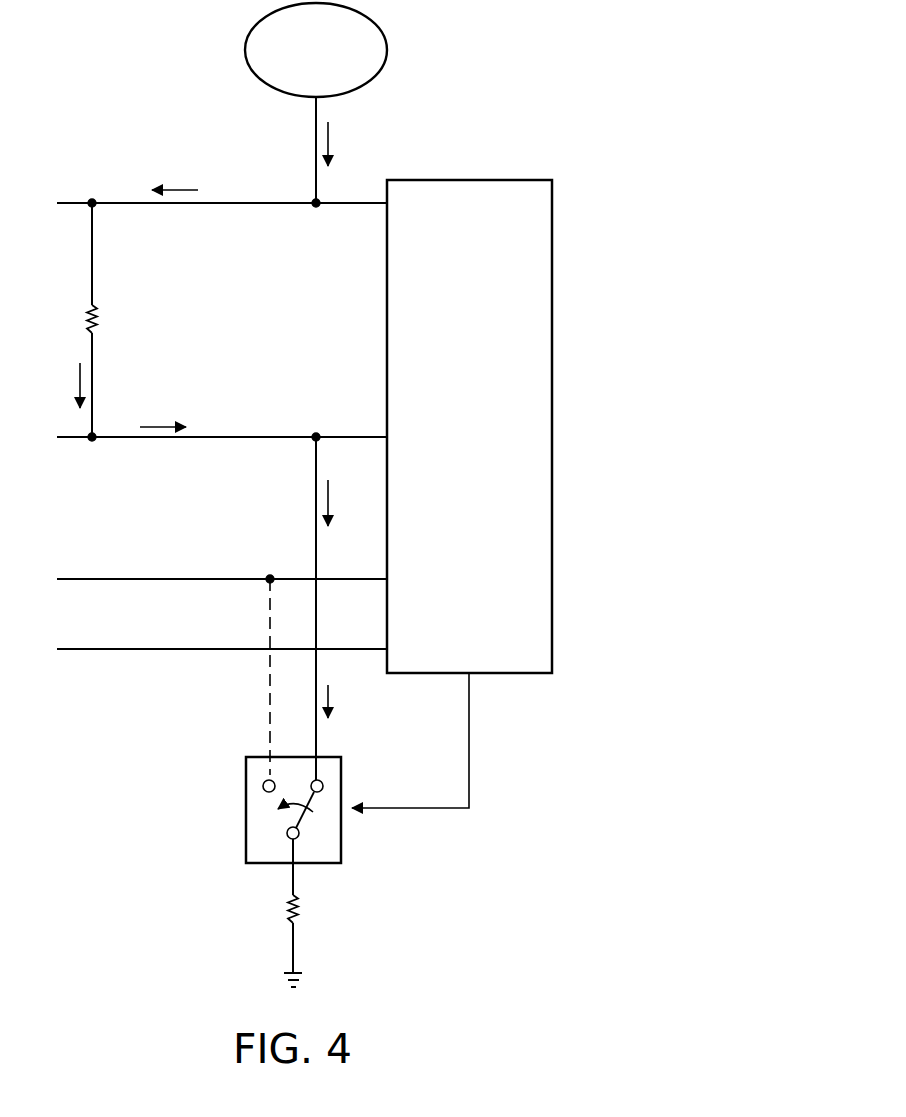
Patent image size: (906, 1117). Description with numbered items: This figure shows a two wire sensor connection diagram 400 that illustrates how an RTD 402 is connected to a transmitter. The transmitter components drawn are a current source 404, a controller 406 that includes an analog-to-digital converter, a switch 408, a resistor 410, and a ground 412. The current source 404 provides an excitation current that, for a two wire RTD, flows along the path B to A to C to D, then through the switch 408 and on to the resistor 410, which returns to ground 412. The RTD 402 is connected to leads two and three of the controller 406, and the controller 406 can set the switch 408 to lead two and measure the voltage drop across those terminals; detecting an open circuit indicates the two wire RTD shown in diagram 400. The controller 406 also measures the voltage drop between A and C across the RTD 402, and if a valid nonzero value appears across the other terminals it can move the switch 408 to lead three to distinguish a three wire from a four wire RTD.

The 2 wire sensor connection diagram 400 is at (100, 70).
The RTD 402 is at (88, 318).
The current source 404 is at (388, 48).
The controller 406 is at (493, 476).
The switch 408 is at (246, 840).
The resistor 410 is at (288, 908).
The ground 412 is at (285, 980).